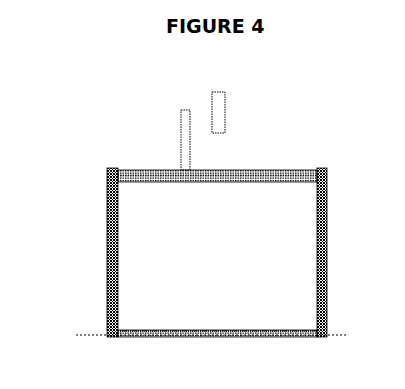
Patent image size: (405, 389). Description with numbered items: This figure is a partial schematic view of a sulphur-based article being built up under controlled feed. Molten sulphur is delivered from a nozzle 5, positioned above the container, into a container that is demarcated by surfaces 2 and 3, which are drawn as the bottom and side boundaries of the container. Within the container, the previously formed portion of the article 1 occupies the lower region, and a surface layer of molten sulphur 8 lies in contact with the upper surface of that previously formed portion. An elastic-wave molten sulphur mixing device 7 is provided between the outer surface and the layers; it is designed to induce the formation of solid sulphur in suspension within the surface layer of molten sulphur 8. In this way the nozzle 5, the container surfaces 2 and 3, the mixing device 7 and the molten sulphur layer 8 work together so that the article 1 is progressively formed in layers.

The article 1 is at (300, 218).
The surface 2 is at (285, 328).
The surface 3 is at (107, 253).
The nozzle 5 is at (222, 115).
The elastic-wave molten sulphur mixing device 7 is at (182, 170).
The surface layer of molten sulphur 8 is at (143, 192).